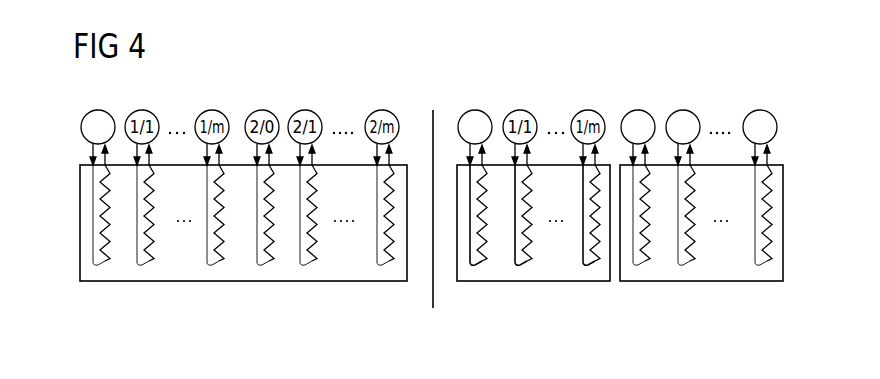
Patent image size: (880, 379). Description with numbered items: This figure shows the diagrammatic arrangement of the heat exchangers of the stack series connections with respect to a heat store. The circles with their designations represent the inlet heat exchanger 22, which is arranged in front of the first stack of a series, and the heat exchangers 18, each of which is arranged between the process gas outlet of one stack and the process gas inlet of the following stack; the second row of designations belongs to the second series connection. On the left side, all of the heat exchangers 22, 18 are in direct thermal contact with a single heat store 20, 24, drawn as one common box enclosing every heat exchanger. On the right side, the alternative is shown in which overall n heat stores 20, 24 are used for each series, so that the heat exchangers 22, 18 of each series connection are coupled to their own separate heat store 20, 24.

The heat exchanger 18 is at (680, 264).
The heat store 20 is at (431, 247).
The inlet heat exchanger 22 is at (102, 265).
The heat store 24 is at (178, 262).